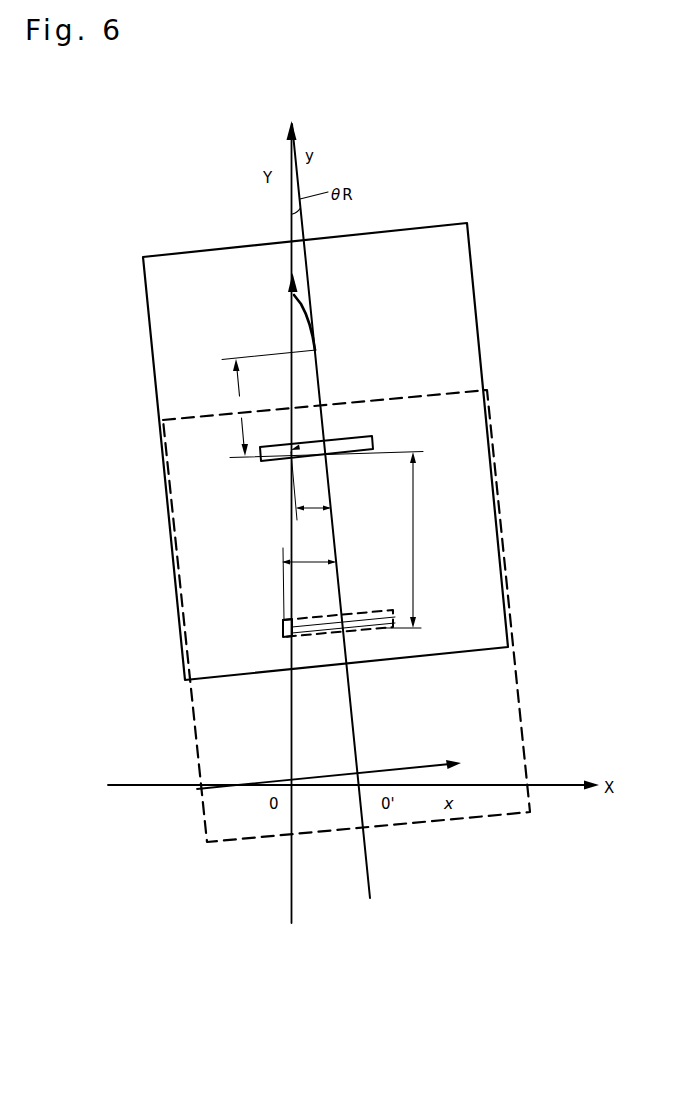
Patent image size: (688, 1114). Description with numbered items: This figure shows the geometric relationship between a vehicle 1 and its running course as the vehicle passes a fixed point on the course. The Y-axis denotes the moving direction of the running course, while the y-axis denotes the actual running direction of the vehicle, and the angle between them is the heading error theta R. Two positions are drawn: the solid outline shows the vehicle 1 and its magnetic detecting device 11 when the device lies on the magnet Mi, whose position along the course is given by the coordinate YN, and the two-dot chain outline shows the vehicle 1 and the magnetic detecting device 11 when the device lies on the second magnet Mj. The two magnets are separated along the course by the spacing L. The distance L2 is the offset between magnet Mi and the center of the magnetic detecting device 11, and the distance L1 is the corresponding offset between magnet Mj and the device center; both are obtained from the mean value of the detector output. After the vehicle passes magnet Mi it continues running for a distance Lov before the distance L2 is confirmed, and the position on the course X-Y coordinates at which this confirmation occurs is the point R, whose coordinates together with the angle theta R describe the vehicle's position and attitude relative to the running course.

The vehicle 1 is at (460, 285).
The magnetic detecting device 11 is at (344, 544).
The magnet Mi is at (289, 457).
The magnet Mj is at (282, 630).
The position R (XR, YR) R is at (320, 317).
The mark spacing L is at (403, 540).
The distance L1 is at (309, 581).
The distance L2 is at (311, 486).
The running distance LOV Lov is at (247, 407).
The coordinate (YN, 0) YN is at (296, 448).